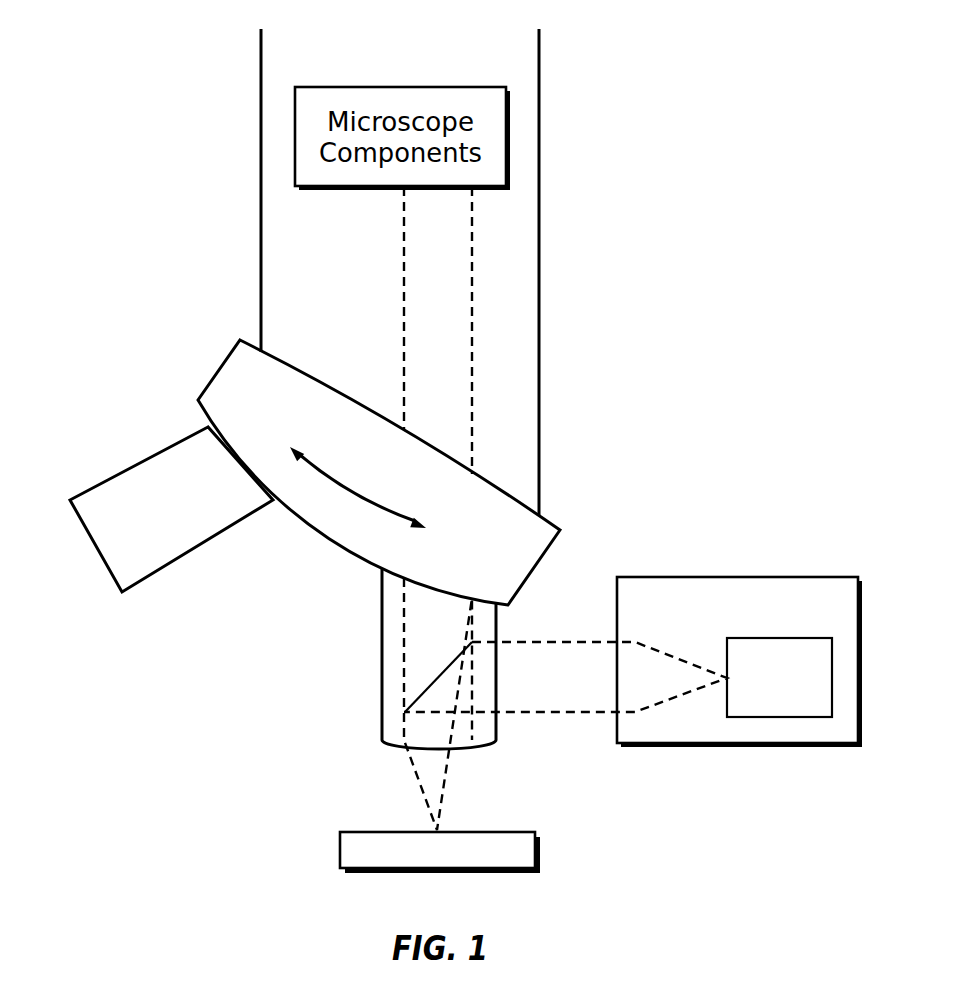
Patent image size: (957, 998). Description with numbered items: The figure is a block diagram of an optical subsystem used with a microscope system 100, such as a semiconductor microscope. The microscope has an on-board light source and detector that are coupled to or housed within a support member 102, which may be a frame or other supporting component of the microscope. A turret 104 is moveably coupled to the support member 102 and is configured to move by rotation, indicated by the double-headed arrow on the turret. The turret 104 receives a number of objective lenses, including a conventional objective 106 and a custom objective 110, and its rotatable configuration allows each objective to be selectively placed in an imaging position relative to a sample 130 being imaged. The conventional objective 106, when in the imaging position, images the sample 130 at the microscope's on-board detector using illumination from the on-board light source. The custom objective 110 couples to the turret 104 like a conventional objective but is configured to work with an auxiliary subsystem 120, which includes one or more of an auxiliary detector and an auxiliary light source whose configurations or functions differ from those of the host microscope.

The microscope system 100 is at (730, 106).
The support member 102 is at (539, 310).
The turret 104 is at (224, 362).
The conventional objective 106 is at (150, 456).
The custom objective 110 is at (382, 642).
The auxiliary subsystem 120 is at (755, 577).
The sample 130 is at (374, 832).